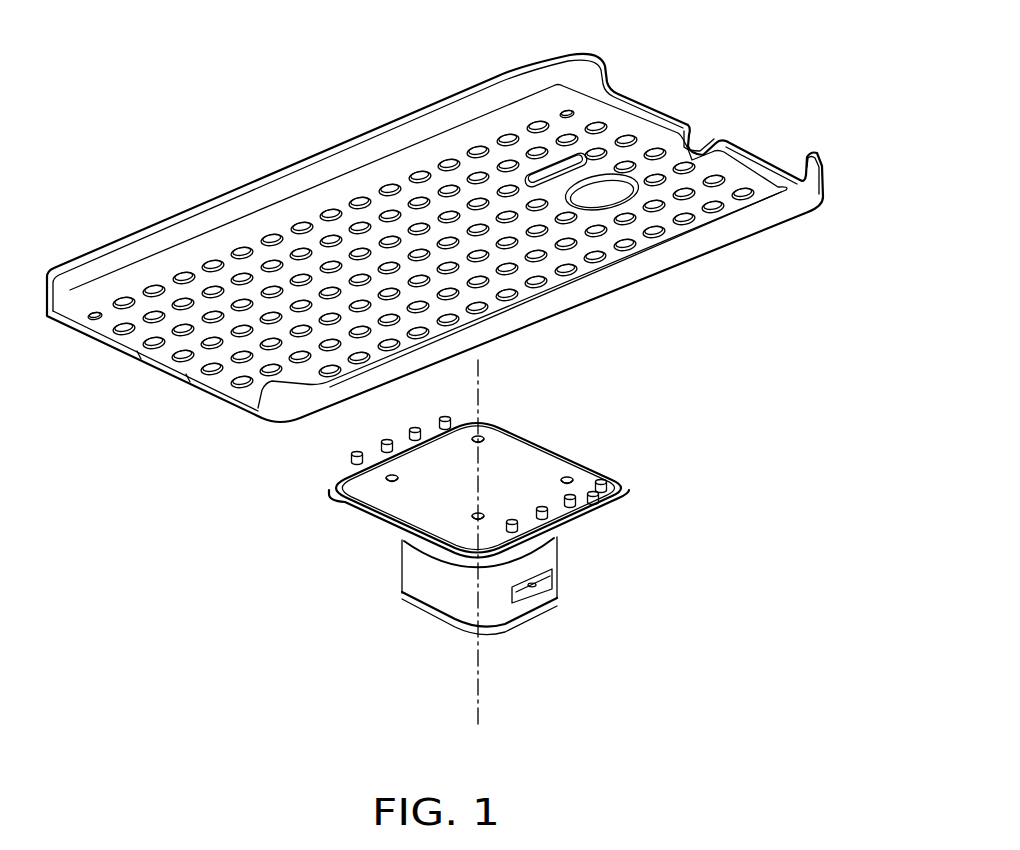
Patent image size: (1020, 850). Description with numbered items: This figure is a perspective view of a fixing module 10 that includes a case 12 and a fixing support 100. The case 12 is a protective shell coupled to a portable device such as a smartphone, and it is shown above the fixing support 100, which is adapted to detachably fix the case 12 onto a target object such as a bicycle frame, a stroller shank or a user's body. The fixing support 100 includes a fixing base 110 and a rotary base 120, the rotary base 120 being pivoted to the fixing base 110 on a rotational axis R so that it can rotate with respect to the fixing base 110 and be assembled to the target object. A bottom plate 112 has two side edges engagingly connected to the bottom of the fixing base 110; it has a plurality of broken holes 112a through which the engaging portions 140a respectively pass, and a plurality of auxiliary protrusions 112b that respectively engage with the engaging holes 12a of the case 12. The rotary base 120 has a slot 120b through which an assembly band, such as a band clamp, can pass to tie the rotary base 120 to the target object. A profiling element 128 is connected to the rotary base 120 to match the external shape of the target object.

The fixing module 10 is at (213, 47).
The case 12 is at (435, 238).
The engaging holes 12a is at (420, 197).
The fixing support 100 is at (516, 546).
The fixing base 110 is at (516, 516).
The bottom plate 112 is at (516, 471).
The broken holes 112a is at (594, 504).
The auxiliary protrusions 112b is at (483, 434).
The rotary base 120 is at (522, 600).
The slot 120b is at (554, 588).
The profiling element 128 is at (552, 614).
The engaging portions 140a is at (604, 487).